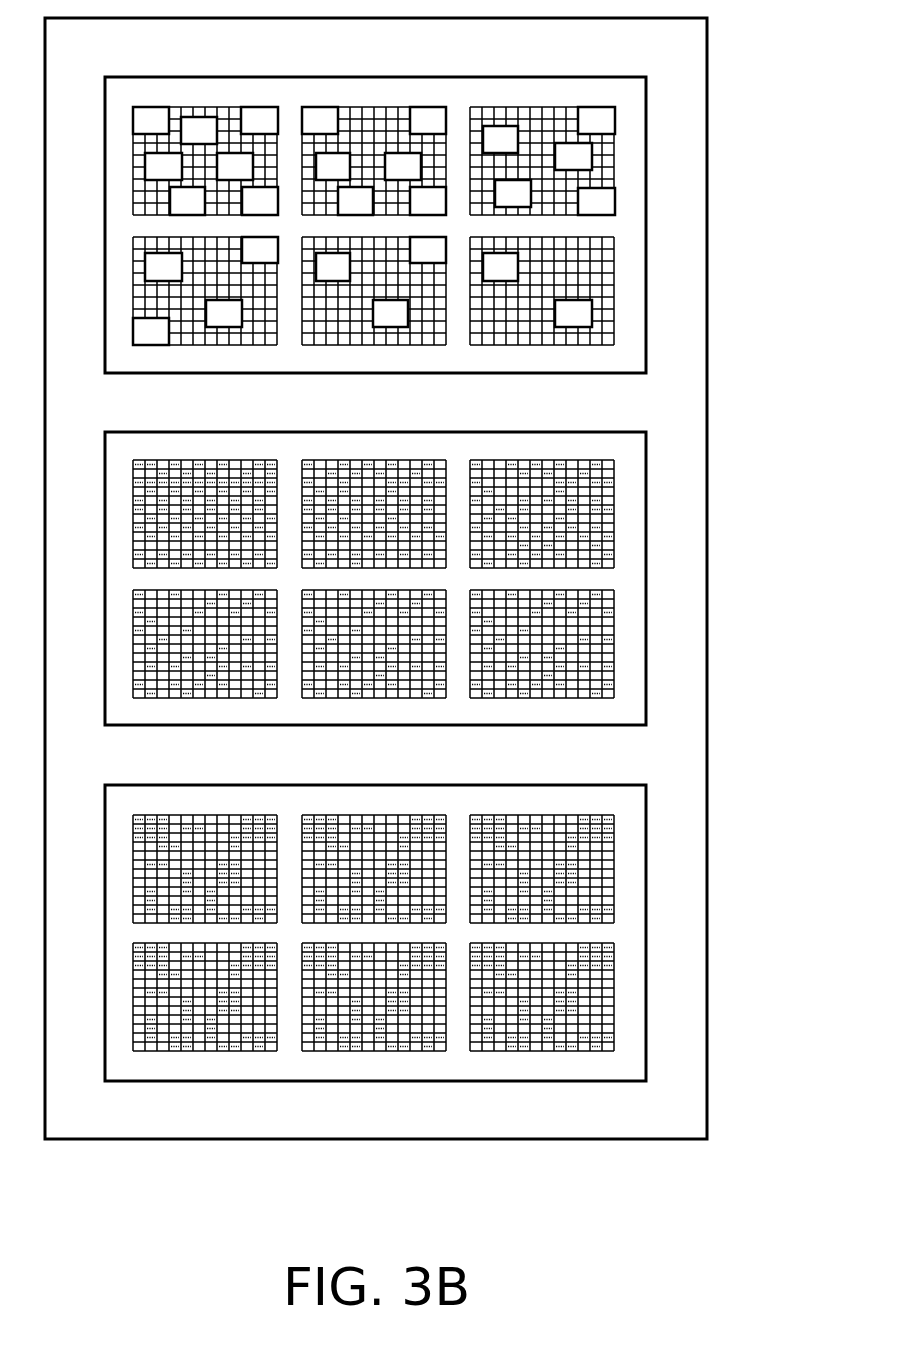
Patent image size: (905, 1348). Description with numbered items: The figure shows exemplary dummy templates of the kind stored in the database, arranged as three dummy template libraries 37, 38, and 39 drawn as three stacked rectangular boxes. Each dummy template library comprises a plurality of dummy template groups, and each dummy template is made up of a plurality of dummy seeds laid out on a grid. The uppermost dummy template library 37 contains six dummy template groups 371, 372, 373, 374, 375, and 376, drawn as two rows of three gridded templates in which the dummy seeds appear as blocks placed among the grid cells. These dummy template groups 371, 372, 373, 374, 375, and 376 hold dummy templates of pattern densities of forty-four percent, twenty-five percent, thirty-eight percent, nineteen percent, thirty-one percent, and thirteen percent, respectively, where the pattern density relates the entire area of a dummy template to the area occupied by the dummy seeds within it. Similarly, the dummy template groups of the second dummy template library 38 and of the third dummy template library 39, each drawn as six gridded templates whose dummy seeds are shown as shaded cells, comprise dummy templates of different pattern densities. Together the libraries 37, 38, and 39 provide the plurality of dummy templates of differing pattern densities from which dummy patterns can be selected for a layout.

The dummy template library 37 is at (451, 228).
The dummy template group 371 is at (203, 115).
The dummy template group 372 is at (200, 337).
The dummy template group 373 is at (383, 113).
The dummy template group 374 is at (378, 337).
The dummy template group 375 is at (550, 113).
The dummy template group 376 is at (547, 337).
The dummy template library 38 is at (628, 578).
The dummy template library 39 is at (628, 930).